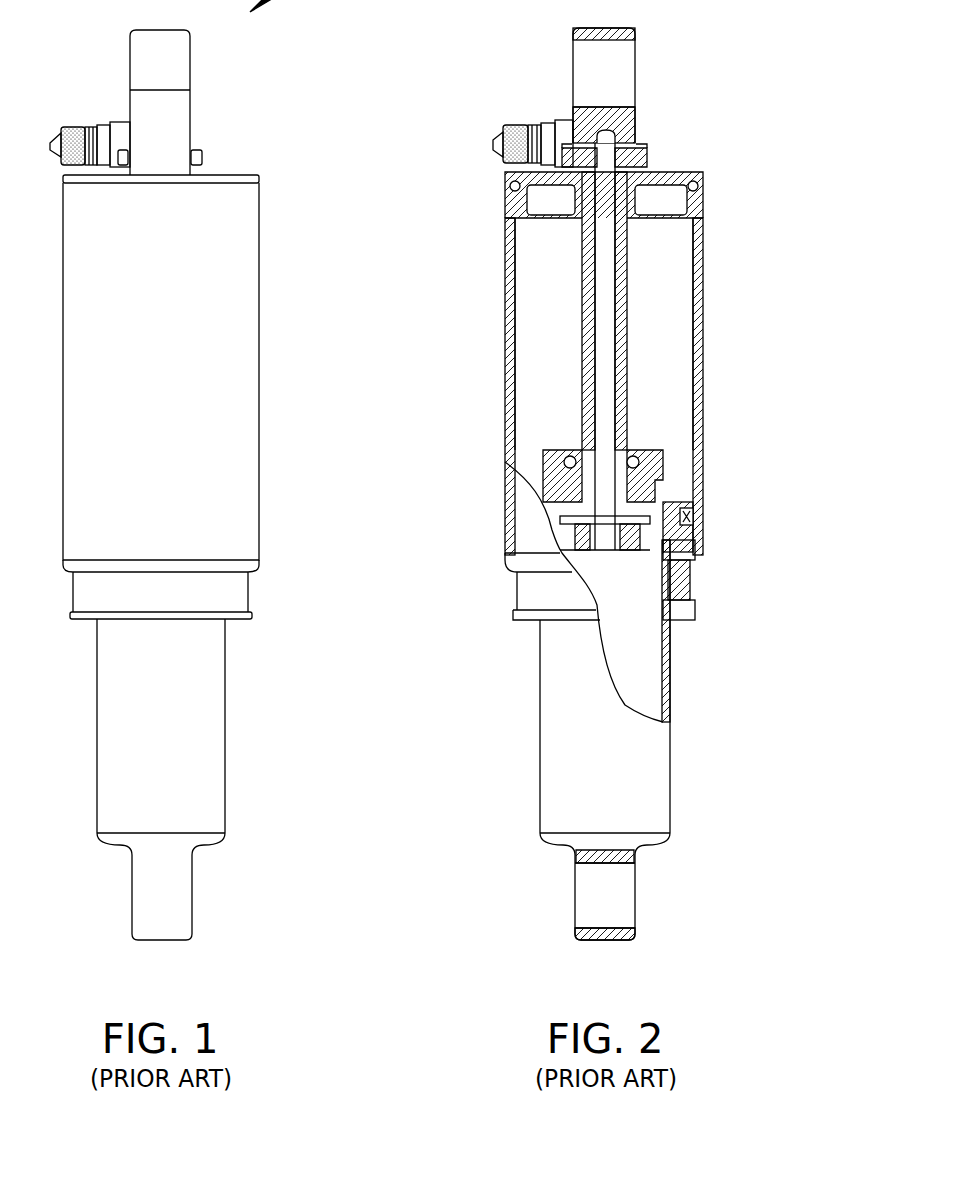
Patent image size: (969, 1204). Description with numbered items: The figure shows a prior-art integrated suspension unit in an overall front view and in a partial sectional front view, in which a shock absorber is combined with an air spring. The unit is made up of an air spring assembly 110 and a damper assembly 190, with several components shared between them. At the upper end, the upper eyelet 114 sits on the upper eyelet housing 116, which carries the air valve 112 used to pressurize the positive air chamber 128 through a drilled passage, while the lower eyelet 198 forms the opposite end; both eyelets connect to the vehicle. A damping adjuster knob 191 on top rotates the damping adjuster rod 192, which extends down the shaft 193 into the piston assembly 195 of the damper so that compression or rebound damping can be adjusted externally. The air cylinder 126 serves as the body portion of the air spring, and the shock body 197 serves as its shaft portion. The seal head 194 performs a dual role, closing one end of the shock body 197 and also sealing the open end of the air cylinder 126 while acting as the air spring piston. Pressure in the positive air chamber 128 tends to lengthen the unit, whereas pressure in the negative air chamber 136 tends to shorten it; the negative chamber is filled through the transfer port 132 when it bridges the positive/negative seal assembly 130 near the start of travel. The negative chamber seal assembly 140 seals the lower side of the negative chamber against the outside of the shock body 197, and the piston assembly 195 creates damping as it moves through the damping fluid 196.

In FIG. 1, the air spring assembly 110 is at (290, 370).
In FIG. 1, the damper assembly 190 is at (278, 740).
In FIG. 2, the air valve 112 is at (517, 140).
In FIG. 2, the upper eyelet 114 is at (620, 75).
In FIG. 2, the upper eyelet housing 116 is at (625, 125).
In FIG. 2, the damping adjuster knob 191 is at (648, 157).
In FIG. 2, the damping adjuster rod 192 is at (700, 183).
In FIG. 2, the shaft 193 is at (620, 238).
In FIG. 2, the air cylinder 126 is at (698, 286).
In FIG. 2, the positive air chamber 128 is at (660, 340).
In FIG. 2, the seal head 194 is at (690, 457).
In FIG. 2, the piston assembly 195 is at (515, 537).
In FIG. 2, the positive/negative seal assembly 130 is at (740, 512).
In FIG. 2, the transfer port 132 is at (693, 524).
In FIG. 2, the negative air chamber 136 is at (693, 568).
In FIG. 2, the negative chamber seal assembly 140 is at (725, 614).
In FIG. 2, the damping fluid 196 is at (640, 676).
In FIG. 2, the shock body 197 is at (640, 768).
In FIG. 2, the lower eyelet 198 is at (600, 905).